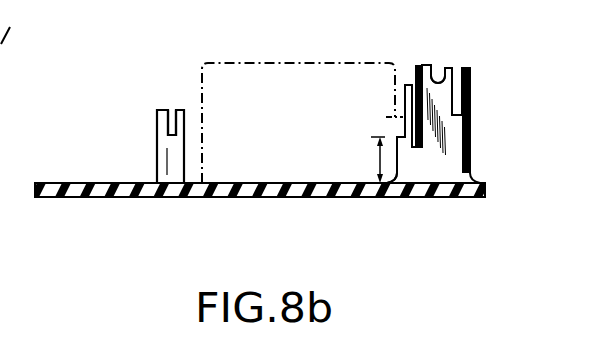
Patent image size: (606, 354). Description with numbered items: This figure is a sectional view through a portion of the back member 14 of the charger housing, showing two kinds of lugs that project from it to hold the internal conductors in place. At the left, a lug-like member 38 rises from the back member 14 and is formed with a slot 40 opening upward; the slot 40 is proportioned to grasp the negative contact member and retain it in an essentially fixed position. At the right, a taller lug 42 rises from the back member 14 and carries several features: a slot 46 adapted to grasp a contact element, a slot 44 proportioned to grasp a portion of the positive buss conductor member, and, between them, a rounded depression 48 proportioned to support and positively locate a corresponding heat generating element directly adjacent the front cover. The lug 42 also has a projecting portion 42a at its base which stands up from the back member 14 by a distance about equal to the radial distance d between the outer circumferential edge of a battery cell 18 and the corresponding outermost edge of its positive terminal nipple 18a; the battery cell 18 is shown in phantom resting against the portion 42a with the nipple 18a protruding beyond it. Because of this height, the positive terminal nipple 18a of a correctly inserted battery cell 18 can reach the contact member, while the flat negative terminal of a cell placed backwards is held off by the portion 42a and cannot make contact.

The back member 14 is at (325, 197).
The battery cell 18 is at (299, 74).
The positive terminal nipple 18a is at (386, 116).
The projecting lug-like member 38 is at (162, 148).
The slot 40 is at (174, 112).
The projecting lug 42 is at (455, 129).
The projecting portion 42a is at (410, 184).
The slot 44 is at (456, 72).
The slot 46 is at (411, 84).
The depression 48 is at (440, 69).
The radial distance d is at (375, 154).